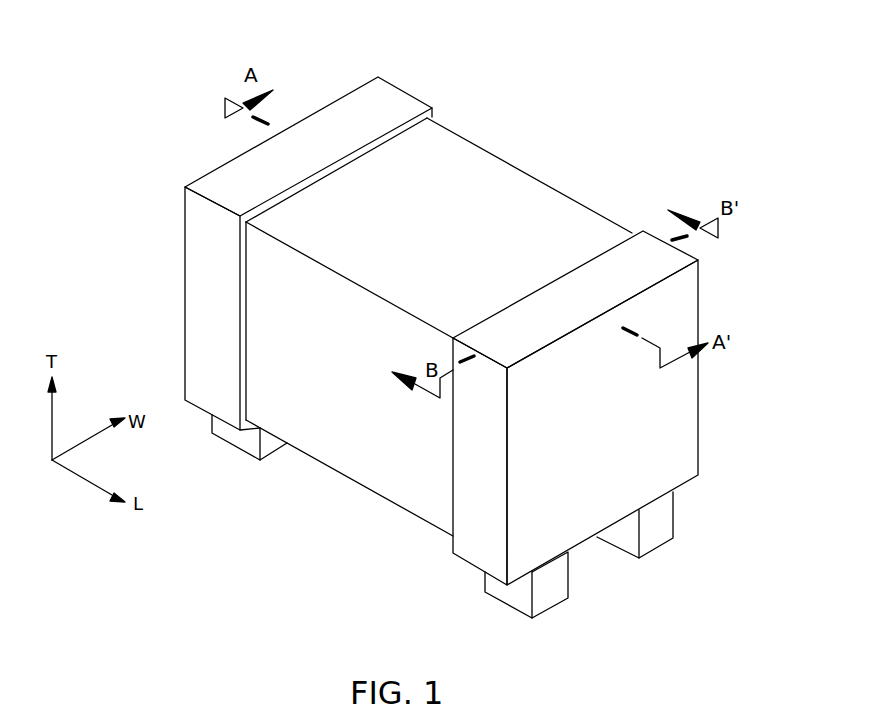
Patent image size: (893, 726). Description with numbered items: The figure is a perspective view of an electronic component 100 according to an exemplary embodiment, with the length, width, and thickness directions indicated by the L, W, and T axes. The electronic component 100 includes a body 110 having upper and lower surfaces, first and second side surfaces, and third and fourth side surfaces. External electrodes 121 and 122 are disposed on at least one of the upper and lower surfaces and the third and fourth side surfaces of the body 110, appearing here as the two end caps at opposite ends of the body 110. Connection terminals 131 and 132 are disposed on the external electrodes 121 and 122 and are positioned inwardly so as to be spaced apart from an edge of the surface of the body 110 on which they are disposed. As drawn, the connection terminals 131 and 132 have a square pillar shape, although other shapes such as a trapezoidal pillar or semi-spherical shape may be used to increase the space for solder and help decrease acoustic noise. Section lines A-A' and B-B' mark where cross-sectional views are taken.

The electronic component 100 is at (582, 39).
The body 110 is at (482, 172).
The external electrode 121 is at (698, 290).
The external electrode 122 is at (390, 93).
The connection terminal 131 is at (560, 578).
The connection terminal 132 is at (242, 440).